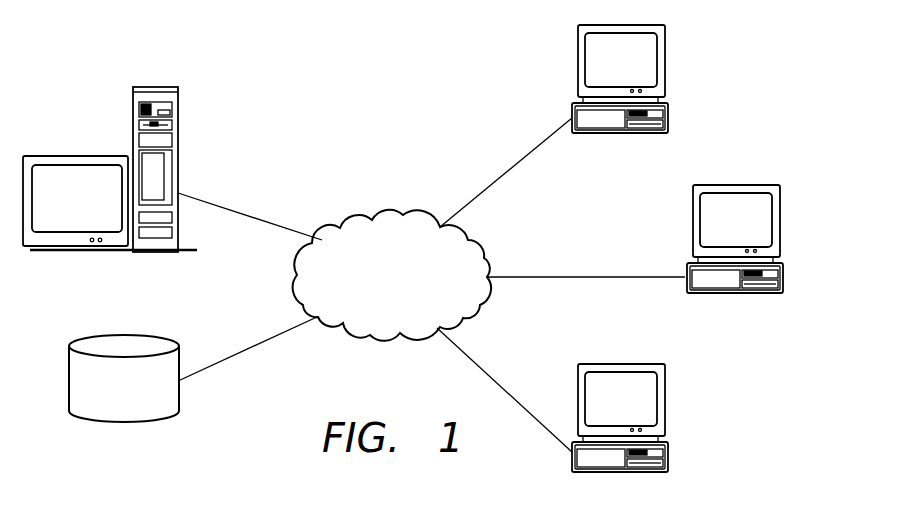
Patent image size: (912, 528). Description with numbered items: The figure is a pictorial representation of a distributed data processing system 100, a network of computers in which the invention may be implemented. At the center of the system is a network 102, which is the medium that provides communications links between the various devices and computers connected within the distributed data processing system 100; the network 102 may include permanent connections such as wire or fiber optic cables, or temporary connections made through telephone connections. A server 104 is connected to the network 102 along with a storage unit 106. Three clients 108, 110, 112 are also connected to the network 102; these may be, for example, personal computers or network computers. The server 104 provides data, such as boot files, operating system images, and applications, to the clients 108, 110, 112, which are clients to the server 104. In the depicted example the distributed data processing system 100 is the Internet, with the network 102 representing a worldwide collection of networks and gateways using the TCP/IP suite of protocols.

The distributed data processing system 100 is at (262, 64).
The network 102 is at (412, 304).
The server 104 is at (133, 112).
The storage unit 106 is at (69, 380).
The client 108 is at (665, 70).
The client 110 is at (780, 225).
The client 112 is at (663, 407).